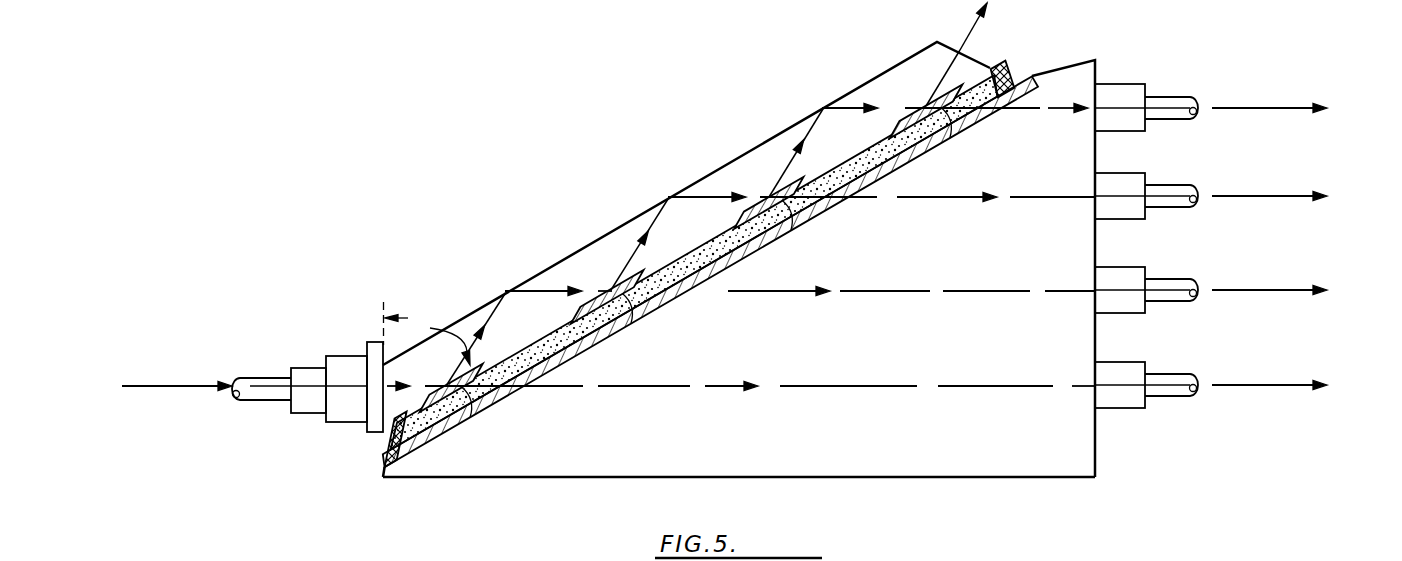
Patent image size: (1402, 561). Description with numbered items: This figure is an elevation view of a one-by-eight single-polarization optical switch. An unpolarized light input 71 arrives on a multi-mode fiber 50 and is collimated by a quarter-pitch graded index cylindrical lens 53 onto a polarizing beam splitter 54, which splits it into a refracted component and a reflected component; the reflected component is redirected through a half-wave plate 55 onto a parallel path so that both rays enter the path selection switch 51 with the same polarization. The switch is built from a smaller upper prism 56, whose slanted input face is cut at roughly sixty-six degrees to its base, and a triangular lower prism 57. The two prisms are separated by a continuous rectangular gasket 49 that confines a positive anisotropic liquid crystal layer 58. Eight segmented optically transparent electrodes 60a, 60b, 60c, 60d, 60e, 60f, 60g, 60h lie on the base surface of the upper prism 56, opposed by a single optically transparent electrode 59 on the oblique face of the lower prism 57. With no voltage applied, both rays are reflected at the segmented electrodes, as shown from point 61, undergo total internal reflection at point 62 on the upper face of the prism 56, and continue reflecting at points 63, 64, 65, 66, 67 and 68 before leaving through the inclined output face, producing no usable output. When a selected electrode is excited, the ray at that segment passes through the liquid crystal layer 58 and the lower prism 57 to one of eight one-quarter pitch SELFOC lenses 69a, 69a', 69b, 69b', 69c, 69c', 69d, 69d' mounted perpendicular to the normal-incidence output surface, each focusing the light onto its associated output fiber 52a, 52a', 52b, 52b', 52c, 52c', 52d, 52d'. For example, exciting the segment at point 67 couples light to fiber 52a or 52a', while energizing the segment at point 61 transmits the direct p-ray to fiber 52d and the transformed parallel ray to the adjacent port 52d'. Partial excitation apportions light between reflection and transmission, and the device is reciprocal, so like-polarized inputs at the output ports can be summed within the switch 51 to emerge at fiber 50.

The unpolarized light input 71 is at (167, 389).
The multi-mode fiber 50 is at (253, 402).
The quarter-pitch graded index cylindrical lens 53 is at (305, 368).
The polarizing beam splitter 54 is at (343, 356).
The half-wave plate 55 is at (374, 342).
The upper prism 56 is at (484, 302).
The lower prism 57 is at (505, 472).
The liquid crystal layer 58 is at (788, 242).
The optically transparent electrode 59 is at (618, 340).
The rectangular gasket 49 is at (392, 445).
The path selection switch 51 is at (739, 292).
The reflection point 61 is at (447, 384).
The total internal reflection point 62 is at (505, 290).
The reflection point 63 is at (612, 288).
The reflection point 64 is at (666, 196).
The reflection point 65 is at (769, 195).
The reflection point 66 is at (821, 105).
The reflection point 67 is at (927, 105).
The reflection point 68 is at (958, 48).
The segmented optically transparent electrode 60a is at (509, 404).
The segmented optically transparent electrode 60e is at (472, 416).
The segmented optically transparent electrode 60b is at (669, 305).
The segmented optically transparent electrode 60f is at (640, 310).
The segmented optically transparent electrode 60c is at (839, 210).
The segmented optically transparent electrode 60g is at (803, 214).
The segmented optically transparent electrode 60d is at (979, 128).
The segmented optically transparent electrode 60h is at (952, 118).
The one-quarter pitch SELFOC lens 69a is at (1164, 84).
The one-quarter pitch SELFOC lens 69a' is at (1164, 84).
The one-quarter pitch SELFOC lens 69b is at (1164, 175).
The one-quarter pitch SELFOC lens 69b' is at (1164, 175).
The one-quarter pitch SELFOC lens 69c is at (1162, 269).
The one-quarter pitch SELFOC lens 69c' is at (1162, 269).
The one-quarter pitch SELFOC lens 69d is at (1164, 364).
The one-quarter pitch SELFOC lens 69d' is at (1164, 364).
The output fiber 52a is at (1255, 87).
The parallel output fiber 52a' is at (1255, 87).
The output fiber 52b is at (1256, 180).
The parallel output fiber 52b' is at (1256, 180).
The output fiber 52c is at (1254, 274).
The parallel output fiber 52c' is at (1254, 274).
The output fiber 52d is at (1256, 369).
The parallel output fiber 52d' is at (1256, 369).